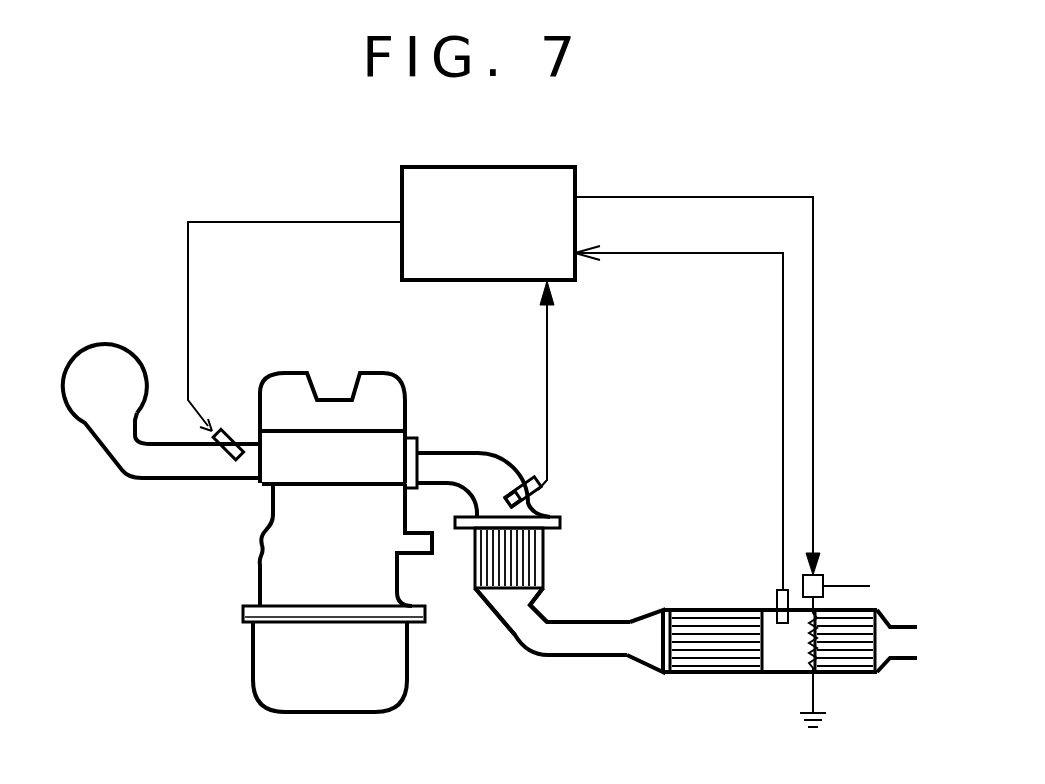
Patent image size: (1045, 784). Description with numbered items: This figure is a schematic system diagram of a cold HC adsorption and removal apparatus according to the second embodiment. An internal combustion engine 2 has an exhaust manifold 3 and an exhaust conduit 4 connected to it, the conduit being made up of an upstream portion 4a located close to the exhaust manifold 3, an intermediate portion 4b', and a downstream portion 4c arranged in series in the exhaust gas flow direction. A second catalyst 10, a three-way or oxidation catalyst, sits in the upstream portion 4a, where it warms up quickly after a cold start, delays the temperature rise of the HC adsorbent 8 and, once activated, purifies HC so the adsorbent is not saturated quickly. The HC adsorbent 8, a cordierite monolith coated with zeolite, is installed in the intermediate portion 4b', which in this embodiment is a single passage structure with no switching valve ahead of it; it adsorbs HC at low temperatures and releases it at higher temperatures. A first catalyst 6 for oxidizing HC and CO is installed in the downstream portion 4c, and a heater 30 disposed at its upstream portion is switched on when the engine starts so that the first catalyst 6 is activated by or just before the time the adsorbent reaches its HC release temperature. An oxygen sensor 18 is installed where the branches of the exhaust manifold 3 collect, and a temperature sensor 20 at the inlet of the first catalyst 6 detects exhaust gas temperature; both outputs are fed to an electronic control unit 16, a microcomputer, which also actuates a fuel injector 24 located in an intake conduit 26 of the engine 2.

The internal combustion engine 2 is at (284, 553).
The exhaust manifold 3 is at (466, 460).
The exhaust conduit 4 is at (512, 638).
The upstream portion 4a is at (502, 595).
The intermediate portion 4b' is at (647, 664).
The downstream portion 4c is at (882, 645).
The first catalyst 6 is at (845, 665).
The HC adsorbent 8 is at (720, 655).
The second catalyst 10 is at (478, 545).
The electronic control unit 16 is at (402, 195).
The oxygen sensor 18 is at (526, 480).
The temperature sensor 20 is at (777, 595).
The fuel injector 24 is at (229, 437).
The intake conduit 26 is at (157, 466).
The heater 30 is at (807, 665).